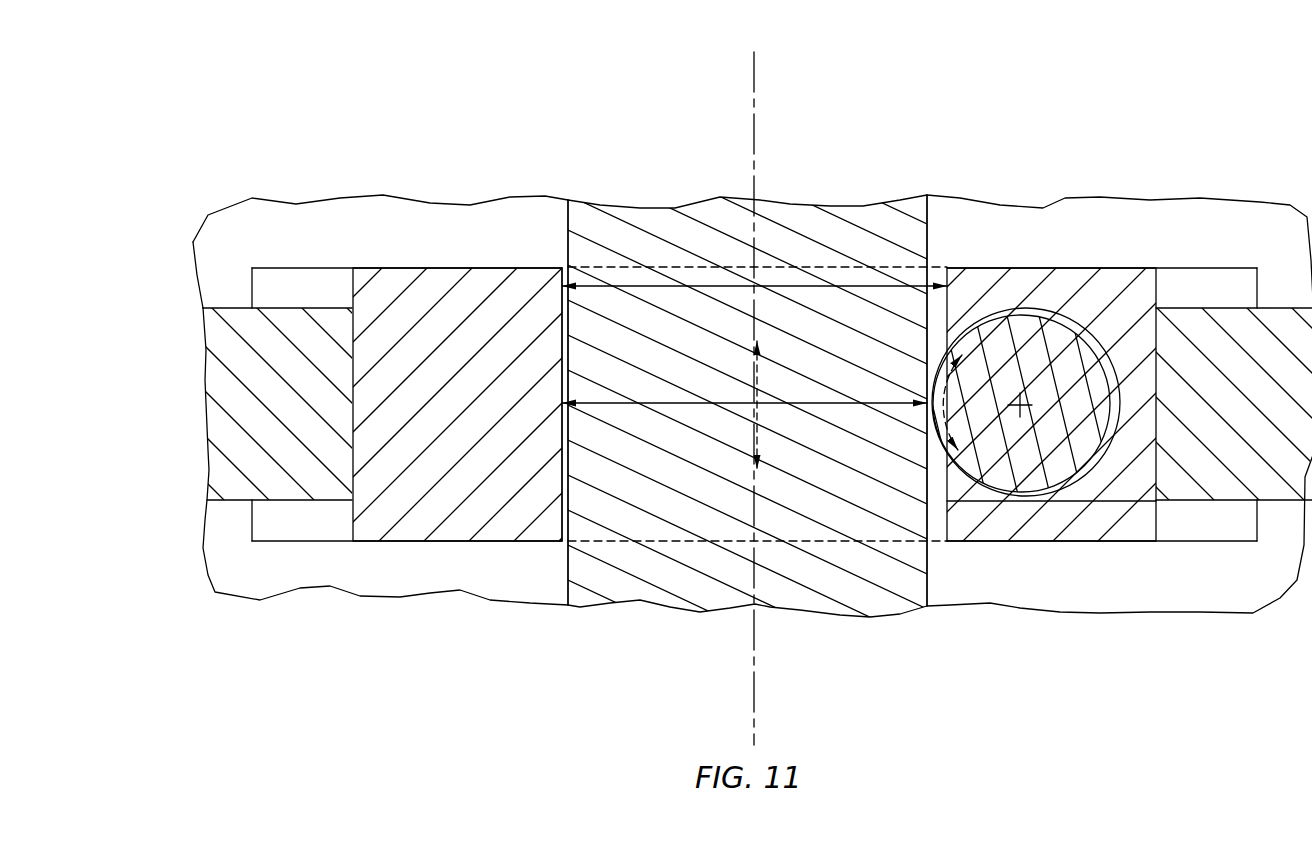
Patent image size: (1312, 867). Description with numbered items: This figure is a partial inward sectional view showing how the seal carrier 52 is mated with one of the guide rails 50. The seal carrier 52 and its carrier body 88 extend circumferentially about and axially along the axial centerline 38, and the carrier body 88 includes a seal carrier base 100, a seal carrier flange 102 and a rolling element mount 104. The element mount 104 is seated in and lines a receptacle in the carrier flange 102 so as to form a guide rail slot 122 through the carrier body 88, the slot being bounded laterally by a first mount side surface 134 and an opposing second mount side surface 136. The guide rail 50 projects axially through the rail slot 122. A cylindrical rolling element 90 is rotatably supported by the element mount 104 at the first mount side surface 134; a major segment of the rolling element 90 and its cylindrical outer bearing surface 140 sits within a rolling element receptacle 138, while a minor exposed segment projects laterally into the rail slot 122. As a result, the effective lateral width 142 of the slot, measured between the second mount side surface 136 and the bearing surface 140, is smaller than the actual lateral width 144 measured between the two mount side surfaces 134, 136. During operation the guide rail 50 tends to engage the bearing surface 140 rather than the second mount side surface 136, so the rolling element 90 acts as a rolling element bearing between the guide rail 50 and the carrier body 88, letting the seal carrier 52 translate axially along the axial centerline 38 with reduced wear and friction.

The axial centerline 38 is at (757, 67).
The guide rail 50 is at (829, 203).
The seal carrier 52 is at (736, 371).
The carrier body 88 is at (255, 191).
The rolling element 90 is at (1033, 500).
The seal carrier base 100 is at (214, 595).
The seal carrier flange 102 is at (201, 459).
The rolling element mount 104 is at (370, 257).
The guide rail slot 122 is at (560, 477).
The first mount side surface 134 is at (927, 522).
The second mount side surface 136 is at (561, 522).
The rolling element receptacle 138 is at (977, 311).
The bearing surface 140 is at (985, 488).
The effective lateral width 142 is at (650, 405).
The actual lateral width 144 is at (650, 288).